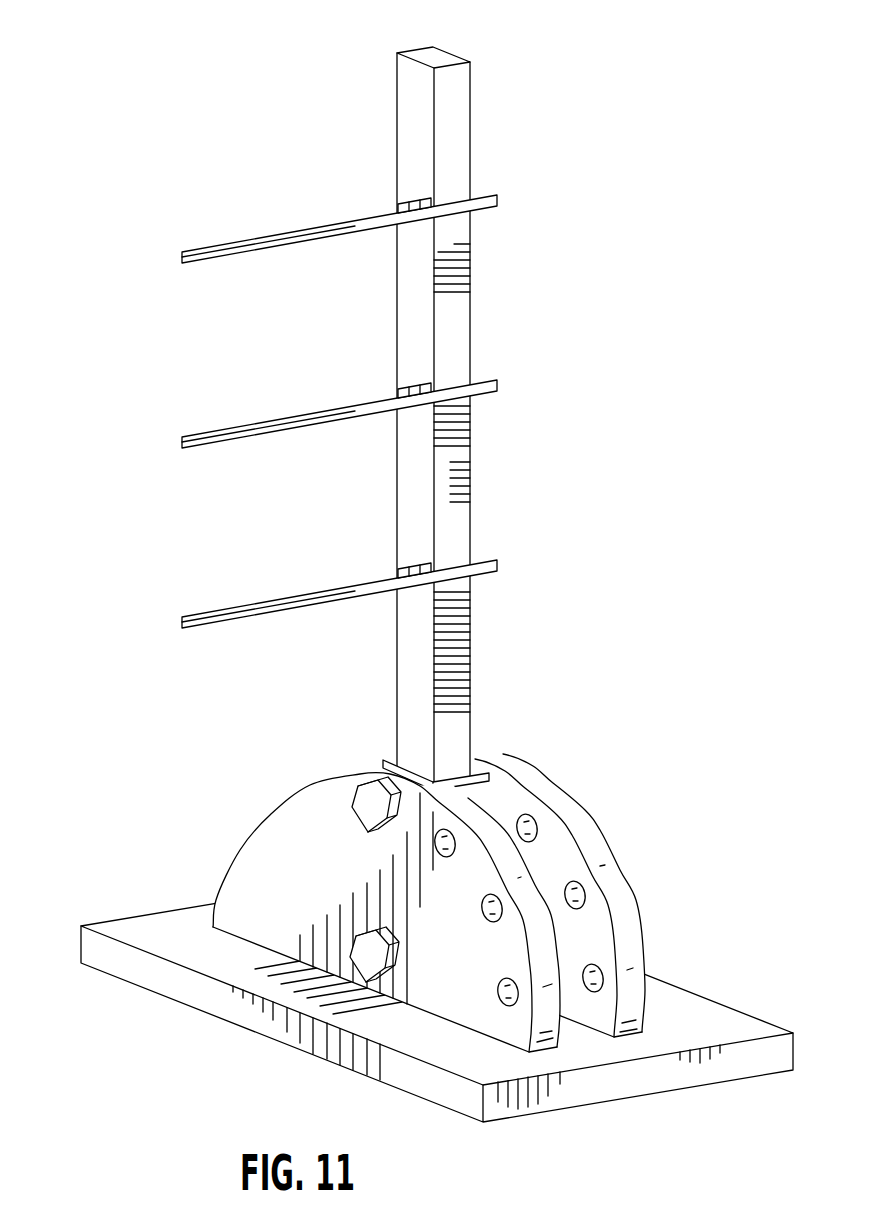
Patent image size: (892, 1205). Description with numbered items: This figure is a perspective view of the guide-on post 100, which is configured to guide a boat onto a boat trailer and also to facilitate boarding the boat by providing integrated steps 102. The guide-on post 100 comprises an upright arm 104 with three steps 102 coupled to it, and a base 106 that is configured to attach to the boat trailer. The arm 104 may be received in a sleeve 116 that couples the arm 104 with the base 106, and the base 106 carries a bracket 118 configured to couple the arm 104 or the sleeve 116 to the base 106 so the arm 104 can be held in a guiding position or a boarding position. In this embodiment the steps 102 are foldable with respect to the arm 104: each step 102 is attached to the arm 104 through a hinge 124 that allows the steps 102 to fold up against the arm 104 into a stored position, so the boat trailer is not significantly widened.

The guide-on post 100 is at (538, 176).
The steps 102 is at (205, 620).
The arm 104 is at (470, 298).
The base 106 is at (190, 955).
The sleeve 116 is at (480, 799).
The bracket 118 is at (280, 876).
The hinge 124 is at (405, 565).